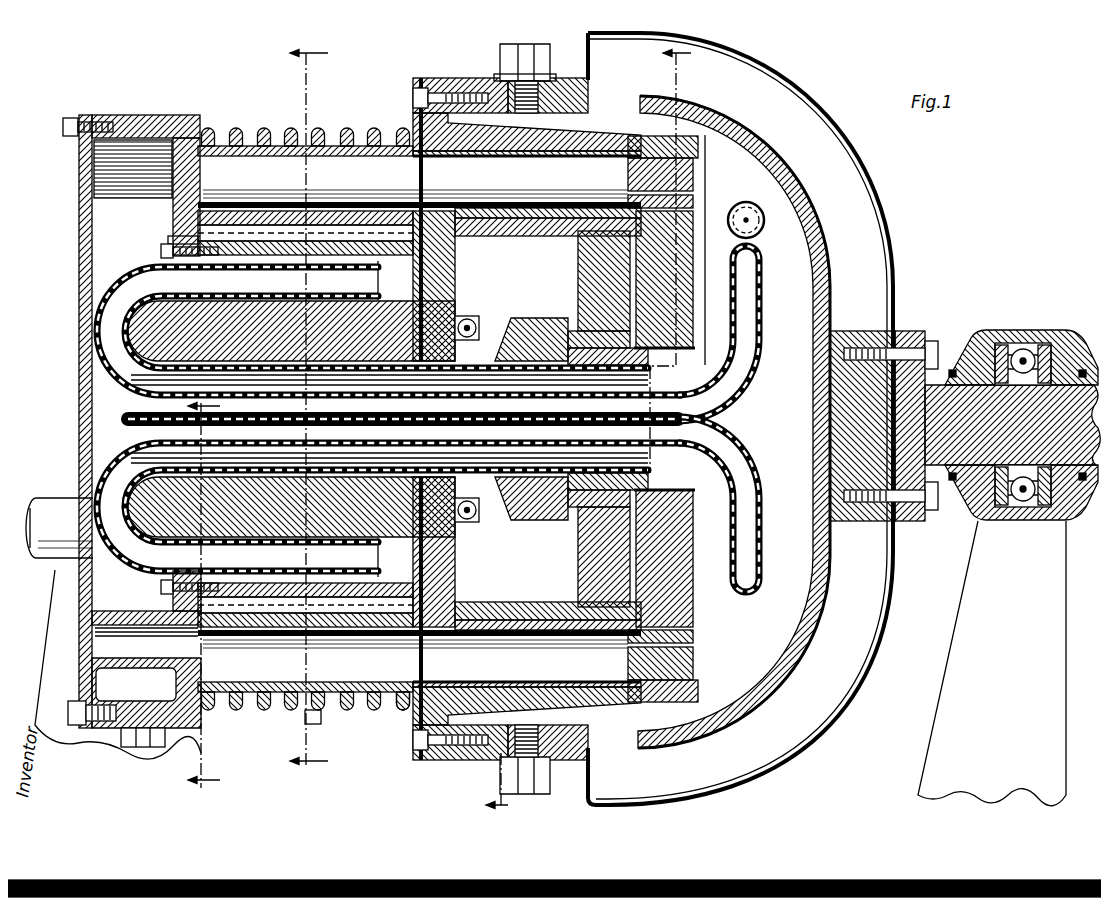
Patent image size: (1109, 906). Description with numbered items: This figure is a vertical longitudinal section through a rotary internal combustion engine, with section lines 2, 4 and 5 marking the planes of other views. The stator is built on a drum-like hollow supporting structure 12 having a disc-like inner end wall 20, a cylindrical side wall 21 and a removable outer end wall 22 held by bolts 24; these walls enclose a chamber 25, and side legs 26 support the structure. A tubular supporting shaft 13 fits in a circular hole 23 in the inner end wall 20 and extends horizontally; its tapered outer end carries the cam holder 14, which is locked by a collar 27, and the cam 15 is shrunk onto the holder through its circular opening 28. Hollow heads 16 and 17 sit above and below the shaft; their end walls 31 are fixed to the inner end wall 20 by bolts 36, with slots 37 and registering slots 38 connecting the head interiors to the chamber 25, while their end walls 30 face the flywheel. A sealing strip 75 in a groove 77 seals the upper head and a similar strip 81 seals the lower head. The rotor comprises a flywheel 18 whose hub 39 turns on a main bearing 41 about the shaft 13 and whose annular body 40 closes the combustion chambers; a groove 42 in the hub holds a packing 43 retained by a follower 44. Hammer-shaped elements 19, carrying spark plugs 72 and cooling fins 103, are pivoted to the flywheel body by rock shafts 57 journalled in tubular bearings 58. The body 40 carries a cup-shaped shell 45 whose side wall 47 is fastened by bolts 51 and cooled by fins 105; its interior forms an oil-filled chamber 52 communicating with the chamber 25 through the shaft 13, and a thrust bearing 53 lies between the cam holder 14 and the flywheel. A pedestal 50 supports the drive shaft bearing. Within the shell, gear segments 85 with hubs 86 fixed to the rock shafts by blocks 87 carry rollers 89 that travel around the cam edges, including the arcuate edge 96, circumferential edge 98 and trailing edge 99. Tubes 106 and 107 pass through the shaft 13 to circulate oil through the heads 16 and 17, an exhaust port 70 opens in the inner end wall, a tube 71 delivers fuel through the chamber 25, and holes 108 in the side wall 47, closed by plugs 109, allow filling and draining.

The section line 2- 2 is at (596, 429).
The section line 4- 4 is at (317, 407).
The section line 5- 5 is at (212, 595).
The hollow supporting structure 12 is at (100, 107).
The tubular supporting shaft 13 is at (500, 310).
The cam holder 14 is at (520, 320).
The cam 15 is at (570, 560).
The head 16 is at (350, 251).
The head 17 is at (322, 570).
The flywheel 18 is at (447, 577).
The hammer-shaped elements 19 is at (384, 704).
The inner end wall 20 is at (200, 138).
The cylindrical side wall 21 is at (140, 107).
The outer end wall 22 is at (70, 160).
The circular hole 23 is at (140, 330).
The bolts 24 is at (62, 108).
The chamber 25 is at (145, 235).
The side legs 26 is at (47, 562).
The collar 27 is at (577, 317).
The circular opening 28 is at (565, 545).
The end walls 30 is at (446, 262).
The end walls 31 is at (162, 230).
The bolts 36 is at (153, 242).
The slots 37 is at (148, 600).
The slots 38 is at (212, 578).
The hub 39 is at (250, 530).
The annular body 40 is at (423, 70).
The main bearing 41 is at (313, 495).
The annular groove 42 is at (245, 293).
The packing 43 is at (212, 490).
The collar type follower 44 is at (207, 291).
The cup-shaped shell 45 is at (805, 205).
The annular side wall 47 is at (556, 70).
The pedestal 50 is at (953, 612).
The bolts 51 is at (410, 752).
The chamber 52 is at (747, 269).
The thrust bearing 53 is at (467, 305).
The rock shafts 57 is at (419, 412).
The elongated tubular bearings 58 is at (515, 230).
The arcuate exhaust port 70 is at (140, 652).
The tube 71 is at (30, 490).
The spark plugs 72 is at (305, 716).
The sealing strip 75 is at (248, 208).
The groove 77 is at (320, 222).
The sealing strip 81 is at (250, 620).
The gear segments 85 is at (688, 210).
The hubs 86 is at (680, 128).
The blocks 87 is at (690, 635).
The rollers 89 is at (627, 297).
The arcuate edge 96 is at (826, 293).
The circumferential edge 98 is at (932, 348).
The trailing edge 99 is at (1016, 342).
The fins 103 is at (300, 128).
The fins 105 is at (820, 114).
The tube 106 is at (755, 300).
The tube 107 is at (755, 508).
The holes 108 is at (495, 45).
The screw type plugs 109 is at (546, 66).